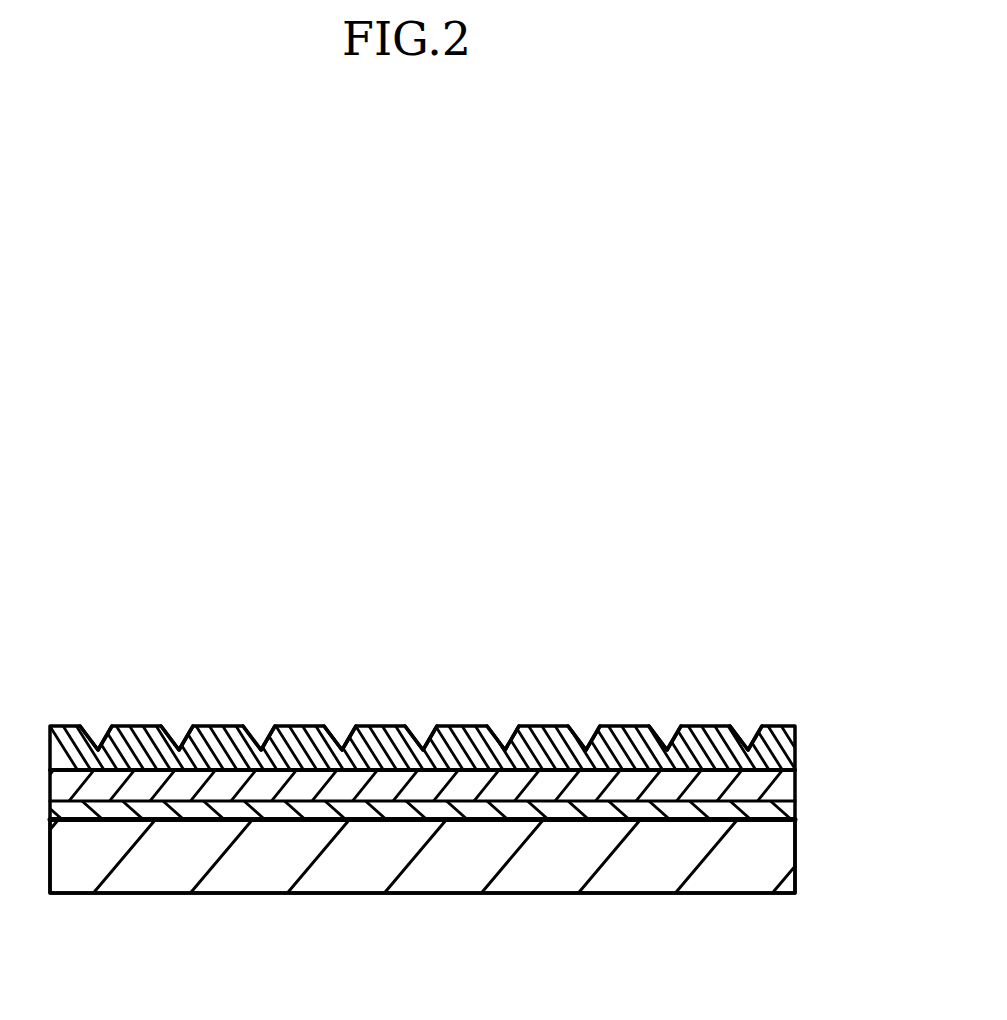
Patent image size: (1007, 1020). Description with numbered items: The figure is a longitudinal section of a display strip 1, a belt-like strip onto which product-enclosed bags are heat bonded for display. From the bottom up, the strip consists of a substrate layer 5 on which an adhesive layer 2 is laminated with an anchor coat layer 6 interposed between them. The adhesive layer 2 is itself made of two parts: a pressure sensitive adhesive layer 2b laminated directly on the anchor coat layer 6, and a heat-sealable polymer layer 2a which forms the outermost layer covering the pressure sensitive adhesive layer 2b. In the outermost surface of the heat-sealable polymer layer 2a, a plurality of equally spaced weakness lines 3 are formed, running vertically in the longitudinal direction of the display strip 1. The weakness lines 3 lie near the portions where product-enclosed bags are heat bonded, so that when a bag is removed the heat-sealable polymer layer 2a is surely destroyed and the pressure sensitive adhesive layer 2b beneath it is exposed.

The display strip 1 is at (460, 619).
The adhesive layer 2 is at (445, 703).
The heat-sealable polymer layer 2a is at (617, 727).
The pressure sensitive adhesive layer 2b is at (697, 782).
The weakness lines 3 is at (177, 737).
The substrate layer 5 is at (550, 870).
The anchor coat layer 6 is at (770, 809).